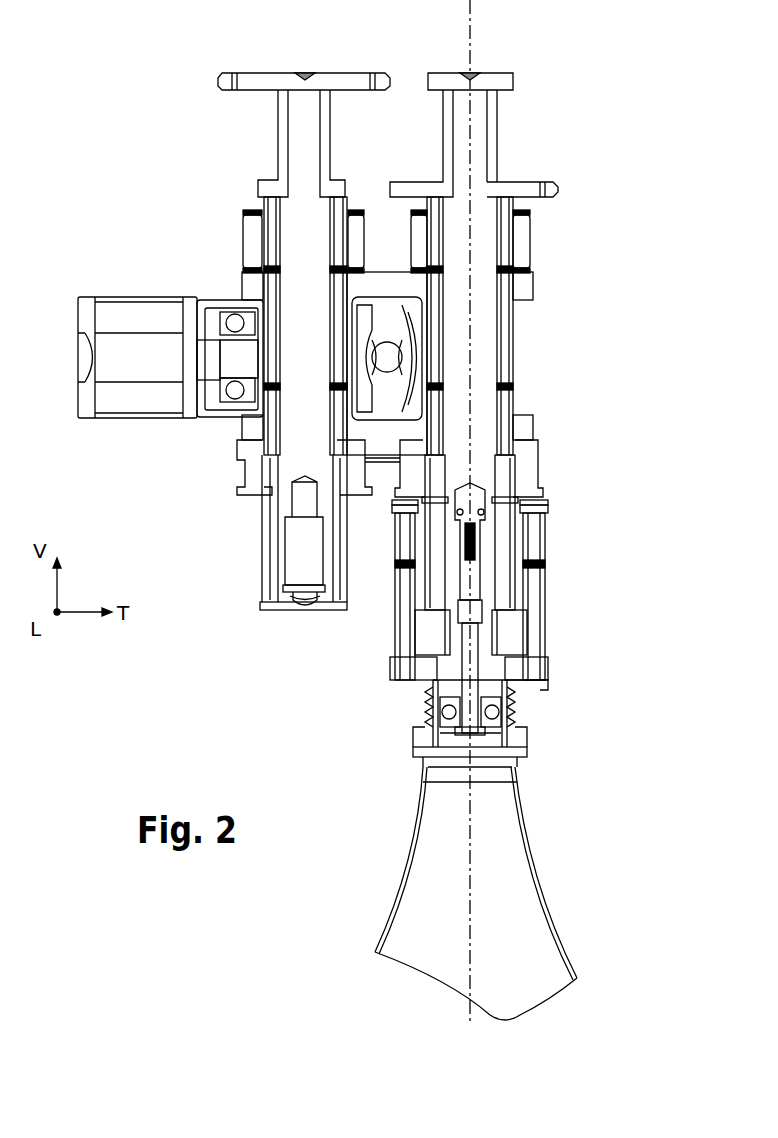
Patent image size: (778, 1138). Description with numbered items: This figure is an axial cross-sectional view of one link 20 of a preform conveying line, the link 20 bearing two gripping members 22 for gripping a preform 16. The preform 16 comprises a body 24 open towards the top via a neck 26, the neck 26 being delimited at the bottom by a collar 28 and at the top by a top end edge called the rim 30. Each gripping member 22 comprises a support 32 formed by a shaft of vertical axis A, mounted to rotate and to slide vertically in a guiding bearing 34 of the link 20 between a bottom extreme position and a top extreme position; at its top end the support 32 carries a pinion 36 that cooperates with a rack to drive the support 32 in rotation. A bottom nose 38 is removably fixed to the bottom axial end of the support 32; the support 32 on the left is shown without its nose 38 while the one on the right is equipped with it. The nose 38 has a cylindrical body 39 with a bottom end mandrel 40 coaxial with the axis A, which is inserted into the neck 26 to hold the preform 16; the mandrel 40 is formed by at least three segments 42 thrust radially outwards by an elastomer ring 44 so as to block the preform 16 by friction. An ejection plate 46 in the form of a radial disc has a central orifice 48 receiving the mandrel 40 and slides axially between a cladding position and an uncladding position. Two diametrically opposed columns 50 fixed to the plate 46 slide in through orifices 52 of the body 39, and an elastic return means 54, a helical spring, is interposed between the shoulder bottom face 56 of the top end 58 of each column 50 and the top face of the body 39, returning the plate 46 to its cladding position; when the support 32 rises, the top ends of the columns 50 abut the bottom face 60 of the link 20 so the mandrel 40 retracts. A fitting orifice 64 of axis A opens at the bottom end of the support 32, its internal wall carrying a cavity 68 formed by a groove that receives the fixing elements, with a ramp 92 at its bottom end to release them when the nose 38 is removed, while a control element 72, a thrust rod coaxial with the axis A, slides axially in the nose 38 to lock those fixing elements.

The preform 16 is at (493, 893).
The link 20 is at (385, 283).
The gripping member 22 is at (411, 101).
The body 24 is at (562, 940).
The neck 26 is at (517, 717).
The collar 28 is at (525, 750).
The rim 30 is at (513, 667).
The support 32 is at (298, 432).
The guiding bearing 34 is at (270, 282).
The pinion 36 is at (288, 63).
The bottom nose 38 is at (500, 624).
The cylindrical body 39 is at (548, 630).
The mandrel 40 is at (435, 690).
The segment 42 is at (435, 705).
The ring 44 is at (440, 718).
The ejection plate 46 is at (547, 675).
The central orifice 48 is at (438, 672).
The column 50 is at (405, 581).
The through orifice 52 is at (513, 630).
The elastic return means 54 is at (547, 547).
The shoulder bottom face 56 is at (547, 520).
The top end 58 is at (532, 508).
The bottom face 60 is at (515, 508).
The fitting orifice 64 is at (298, 545).
The cavity 68 is at (285, 607).
The control element 72 is at (425, 760).
The ramp 92 is at (312, 610).
The axis A is at (470, 152).